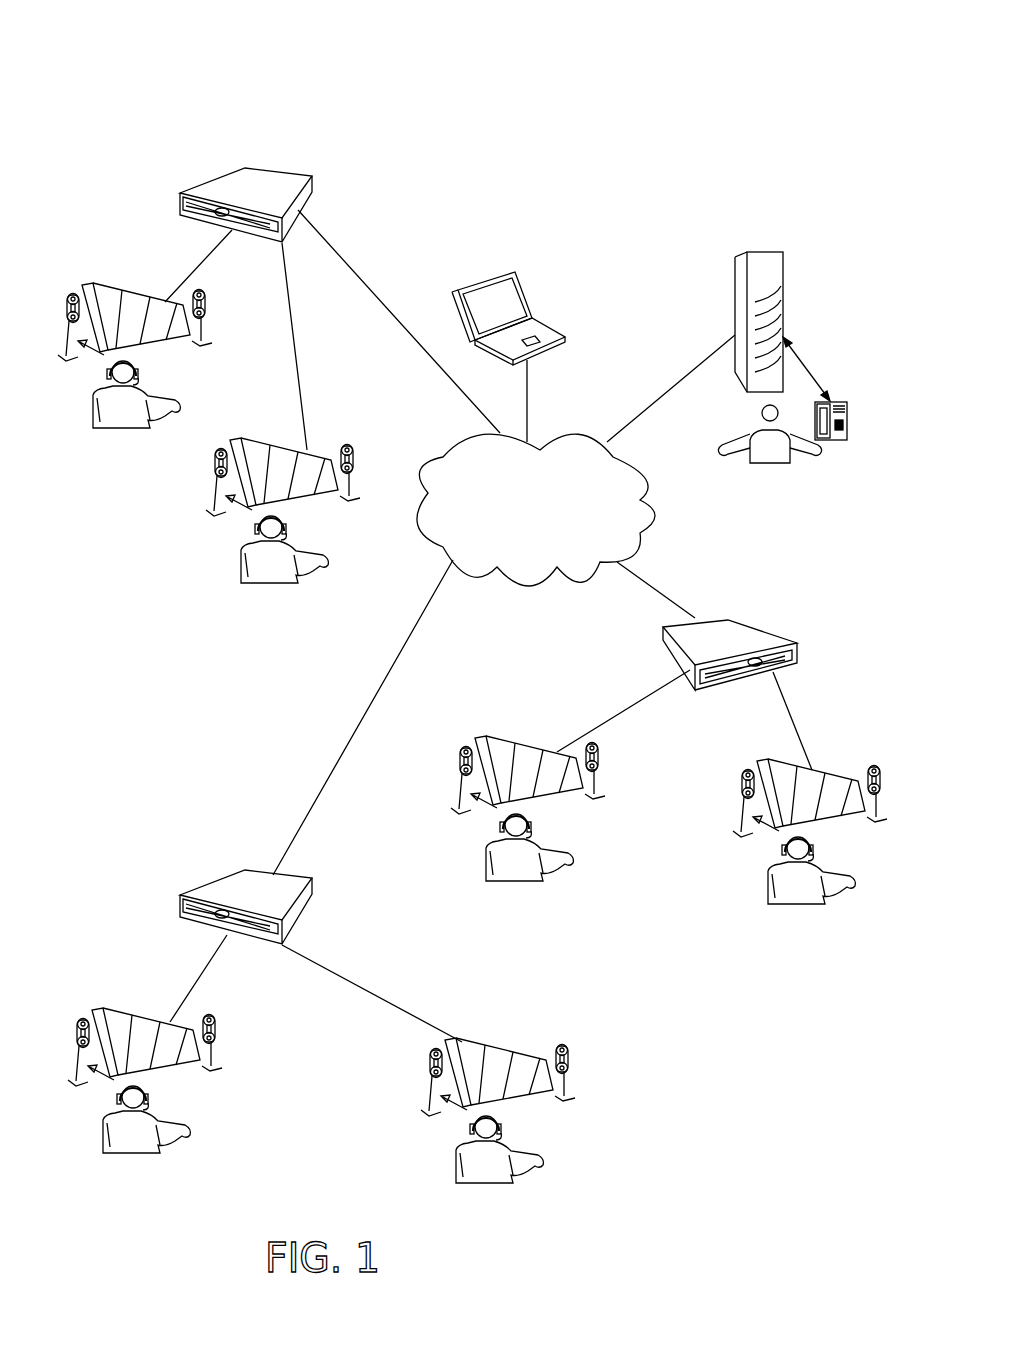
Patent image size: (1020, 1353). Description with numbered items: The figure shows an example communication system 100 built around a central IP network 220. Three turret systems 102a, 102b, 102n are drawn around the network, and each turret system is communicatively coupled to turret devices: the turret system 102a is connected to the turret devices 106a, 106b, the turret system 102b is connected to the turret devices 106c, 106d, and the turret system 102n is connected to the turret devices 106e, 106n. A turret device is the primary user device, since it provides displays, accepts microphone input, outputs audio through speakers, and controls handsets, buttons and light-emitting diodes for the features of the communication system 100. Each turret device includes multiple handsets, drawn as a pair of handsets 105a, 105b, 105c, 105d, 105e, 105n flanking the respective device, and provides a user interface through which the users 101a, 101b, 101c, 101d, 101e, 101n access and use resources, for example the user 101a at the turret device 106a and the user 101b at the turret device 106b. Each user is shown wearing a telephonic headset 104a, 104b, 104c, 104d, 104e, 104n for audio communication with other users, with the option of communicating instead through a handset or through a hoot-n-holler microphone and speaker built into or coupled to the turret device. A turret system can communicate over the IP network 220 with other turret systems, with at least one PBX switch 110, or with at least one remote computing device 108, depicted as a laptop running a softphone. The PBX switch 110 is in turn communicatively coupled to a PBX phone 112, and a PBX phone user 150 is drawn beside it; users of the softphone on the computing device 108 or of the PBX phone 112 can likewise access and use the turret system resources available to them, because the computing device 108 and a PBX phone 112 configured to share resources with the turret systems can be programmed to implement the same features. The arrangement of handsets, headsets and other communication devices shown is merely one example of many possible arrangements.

The communication system 100 is at (158, 58).
The user 101a is at (97, 428).
The user 101b is at (270, 583).
The user 101c is at (138, 1153).
The user 101d is at (492, 1183).
The user 101e is at (522, 881).
The user 101n is at (802, 904).
The turret system 102a is at (208, 182).
The turret system 102b is at (218, 880).
The turret system 102n is at (716, 621).
The telephonic headset 104a is at (107, 373).
The telephonic headset 104b is at (255, 527).
The telephonic headset 104c is at (117, 1098).
The telephonic headset 104d is at (470, 1128).
The telephonic headset 104e is at (500, 826).
The telephonic headset 104n is at (782, 849).
The handset 105a is at (60, 310).
The handset 105b is at (356, 460).
The handset 105c is at (72, 1036).
The handset 105d is at (428, 1064).
The handset 105e is at (458, 762).
The handset 105n is at (880, 766).
The turret device 106a is at (145, 296).
The turret device 106b is at (320, 457).
The turret device 106c is at (155, 1021).
The turret device 106d is at (515, 1052).
The turret device 106e is at (548, 751).
The turret device 106n is at (832, 775).
The computing device 108 is at (522, 282).
The PBX switch 110 is at (735, 278).
The PBX phone 112 is at (835, 400).
The PBX phone user 150 is at (767, 465).
The IP network 220 is at (520, 582).